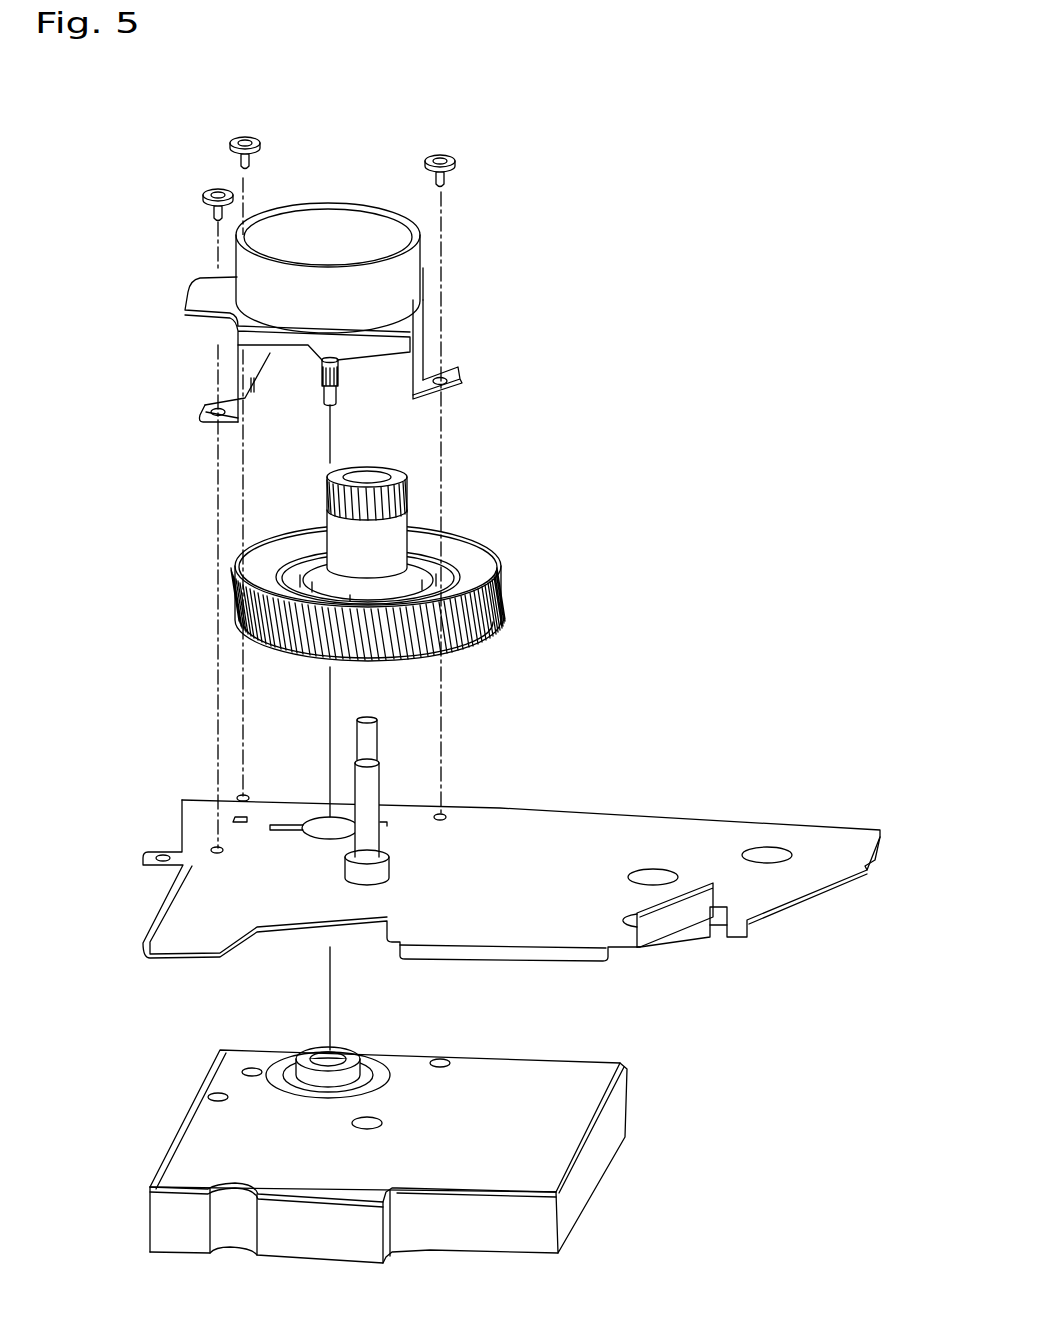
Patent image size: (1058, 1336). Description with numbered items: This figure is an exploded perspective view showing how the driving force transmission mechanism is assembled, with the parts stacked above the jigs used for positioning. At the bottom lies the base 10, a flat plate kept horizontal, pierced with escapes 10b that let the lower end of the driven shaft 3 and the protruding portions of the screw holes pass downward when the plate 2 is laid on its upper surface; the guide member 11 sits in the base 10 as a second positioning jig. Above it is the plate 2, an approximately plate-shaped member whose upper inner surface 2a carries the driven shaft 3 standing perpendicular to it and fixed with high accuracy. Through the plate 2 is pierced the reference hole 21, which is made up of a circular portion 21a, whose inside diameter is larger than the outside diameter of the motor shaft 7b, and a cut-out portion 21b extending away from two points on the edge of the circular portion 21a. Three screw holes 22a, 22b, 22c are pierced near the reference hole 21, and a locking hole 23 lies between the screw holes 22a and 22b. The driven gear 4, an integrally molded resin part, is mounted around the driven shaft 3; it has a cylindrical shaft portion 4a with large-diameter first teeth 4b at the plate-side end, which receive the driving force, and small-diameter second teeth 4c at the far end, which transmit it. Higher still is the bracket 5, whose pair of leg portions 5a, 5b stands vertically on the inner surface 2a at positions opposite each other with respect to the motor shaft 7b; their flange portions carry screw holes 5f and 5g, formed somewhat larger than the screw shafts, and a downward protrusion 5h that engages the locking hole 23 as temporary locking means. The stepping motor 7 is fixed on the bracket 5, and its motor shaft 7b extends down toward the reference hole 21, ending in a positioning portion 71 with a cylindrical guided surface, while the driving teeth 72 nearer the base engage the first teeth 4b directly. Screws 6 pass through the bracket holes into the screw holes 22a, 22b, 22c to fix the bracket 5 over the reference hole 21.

The plate 2 is at (624, 829).
The inner surface 2a is at (545, 826).
The driven shaft 3 is at (378, 782).
The driven gear 4 is at (524, 542).
The shaft portion 4a is at (398, 541).
The first teeth 4b is at (500, 607).
The second teeth 4c is at (410, 493).
The bracket 5 is at (434, 334).
The leg portion 5a is at (238, 375).
The leg portion 5b is at (430, 352).
The screw holes 5f is at (212, 412).
The screw hole 5g is at (448, 380).
The protrusion 5h is at (254, 395).
The screws 6 is at (236, 142).
The stepping motor 7 is at (331, 214).
The motor shaft 7b is at (352, 381).
The positioning portion 71 is at (334, 405).
The driving teeth 72 is at (318, 378).
The base 10 is at (602, 1150).
The escapes 10b is at (382, 1121).
The guide member 11 is at (302, 1070).
The reference hole 21 is at (293, 801).
The circular portion 21a is at (317, 838).
The cut-out portion 21b is at (280, 832).
The screw hole 22a is at (214, 849).
The screw hole 22b is at (240, 796).
The screw hole 22c is at (443, 814).
The locking hole 23 is at (238, 817).